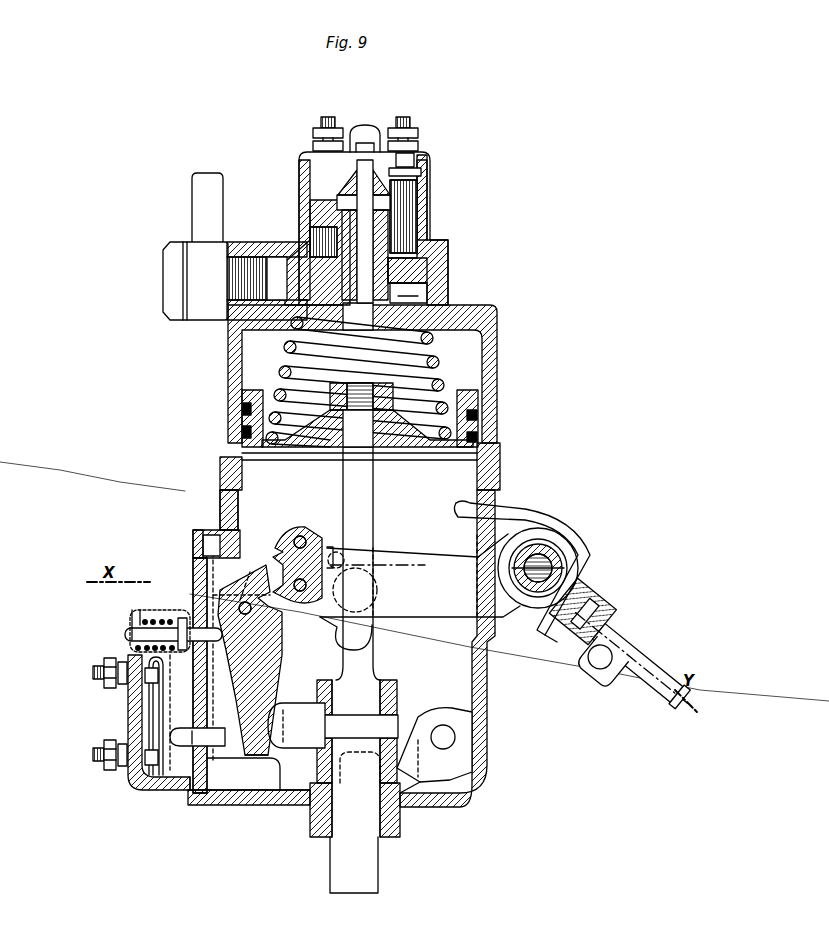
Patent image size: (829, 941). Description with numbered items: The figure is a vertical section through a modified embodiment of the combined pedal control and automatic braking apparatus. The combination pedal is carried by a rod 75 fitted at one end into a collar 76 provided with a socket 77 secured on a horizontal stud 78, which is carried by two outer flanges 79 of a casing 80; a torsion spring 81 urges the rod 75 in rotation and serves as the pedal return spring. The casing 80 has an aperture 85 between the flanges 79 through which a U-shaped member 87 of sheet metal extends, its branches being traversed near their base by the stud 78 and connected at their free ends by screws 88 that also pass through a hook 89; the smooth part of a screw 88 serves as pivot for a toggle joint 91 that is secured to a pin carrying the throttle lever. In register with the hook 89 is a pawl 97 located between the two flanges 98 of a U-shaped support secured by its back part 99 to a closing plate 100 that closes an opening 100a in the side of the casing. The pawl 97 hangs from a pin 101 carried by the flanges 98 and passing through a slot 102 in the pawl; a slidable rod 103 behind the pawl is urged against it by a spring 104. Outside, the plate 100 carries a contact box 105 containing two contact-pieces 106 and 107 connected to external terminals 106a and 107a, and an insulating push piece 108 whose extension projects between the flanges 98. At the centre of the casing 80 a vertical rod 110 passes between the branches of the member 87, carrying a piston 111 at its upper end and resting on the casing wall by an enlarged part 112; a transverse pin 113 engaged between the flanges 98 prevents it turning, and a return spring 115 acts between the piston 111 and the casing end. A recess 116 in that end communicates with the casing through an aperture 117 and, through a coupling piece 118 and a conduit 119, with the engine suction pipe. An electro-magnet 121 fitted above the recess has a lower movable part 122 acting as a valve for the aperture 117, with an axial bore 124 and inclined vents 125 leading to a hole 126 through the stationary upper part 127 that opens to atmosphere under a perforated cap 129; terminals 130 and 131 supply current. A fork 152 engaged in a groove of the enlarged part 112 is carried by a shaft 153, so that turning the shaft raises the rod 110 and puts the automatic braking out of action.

The rod 75 is at (631, 677).
The operating arm 76 is at (642, 615).
The socket 77 is at (562, 575).
The horizontal stud 78 is at (590, 522).
The outer flanges 79 is at (543, 609).
The casing 80 is at (493, 478).
The torsion spring 81 is at (515, 523).
The aperture 85 is at (482, 627).
The U-shaped member 87 is at (440, 612).
The screws 88 is at (304, 537).
The hook 89 is at (278, 547).
The toggle joint 91 is at (303, 617).
The pawl 97 is at (255, 660).
The flanges 98 is at (242, 752).
The back part 99 is at (178, 782).
The closing plate 100 is at (193, 565).
The opening 100a is at (193, 580).
The pin 101 is at (228, 548).
The slot 102 is at (248, 590).
The slidable rod 103 is at (238, 607).
The spring 104 is at (137, 612).
The contact box 105 is at (157, 795).
The contact-piece 106 is at (155, 680).
The external terminal 106a is at (113, 687).
The contact-piece 107 is at (180, 805).
The external terminal 107a is at (107, 773).
The push piece 108 is at (180, 733).
The vertical rod 110 is at (374, 518).
The piston 111 is at (480, 428).
The enlarged part 112 is at (390, 706).
The transverse pin 113 is at (296, 748).
The return spring 115 is at (450, 383).
The recess 116 is at (418, 293).
The aperture 117 is at (450, 312).
The coupling piece 118 is at (197, 312).
The conduit 119 is at (205, 203).
The electro-magnet 121 is at (430, 225).
The lower movable part 122 is at (445, 263).
The axial bore 124 is at (358, 252).
The inclined vents 125 is at (392, 212).
The hole 126 is at (432, 172).
The stationary upper part 127 is at (345, 183).
The perforated cap 129 is at (374, 128).
The terminal 130 is at (326, 118).
The terminal 131 is at (414, 121).
The fork 152 is at (410, 793).
The shaft 153 is at (455, 737).